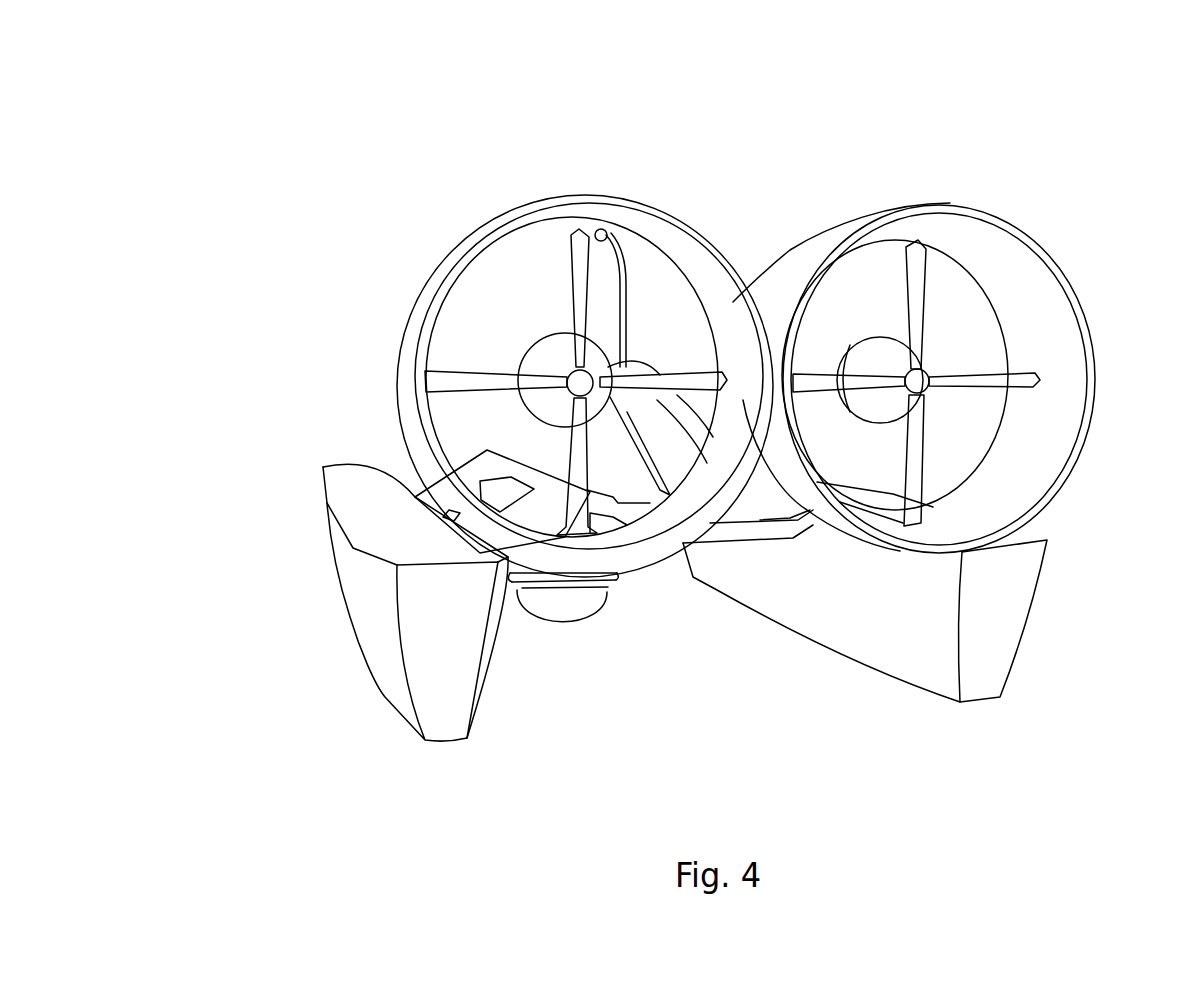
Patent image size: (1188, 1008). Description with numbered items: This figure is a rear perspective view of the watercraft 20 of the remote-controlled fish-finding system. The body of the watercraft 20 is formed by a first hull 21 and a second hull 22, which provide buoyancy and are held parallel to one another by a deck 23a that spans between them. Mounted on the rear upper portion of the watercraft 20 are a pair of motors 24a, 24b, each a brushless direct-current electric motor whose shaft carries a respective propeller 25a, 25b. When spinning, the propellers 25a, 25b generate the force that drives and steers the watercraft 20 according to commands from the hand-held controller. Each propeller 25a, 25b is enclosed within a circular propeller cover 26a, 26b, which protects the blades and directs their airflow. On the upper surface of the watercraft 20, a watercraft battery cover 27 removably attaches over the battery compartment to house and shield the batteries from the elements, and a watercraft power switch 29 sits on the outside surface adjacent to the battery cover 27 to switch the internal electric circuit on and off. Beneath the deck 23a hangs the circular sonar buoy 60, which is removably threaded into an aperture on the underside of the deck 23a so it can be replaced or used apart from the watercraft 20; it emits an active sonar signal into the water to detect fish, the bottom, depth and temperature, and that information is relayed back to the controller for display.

The watercraft 20 is at (203, 143).
The first hull 21 is at (430, 657).
The second hull 22 is at (1008, 623).
The deck 23a is at (620, 463).
The motor 24a is at (870, 413).
The motor 24b is at (547, 355).
The propeller 25a is at (915, 270).
The propeller 25b is at (692, 383).
The circular propeller cover 26a is at (1062, 327).
The circular propeller cover 26b is at (422, 303).
The watercraft battery cover 27 is at (487, 495).
The watercraft power switch 29 is at (445, 516).
The sonar buoy 60 is at (563, 608).